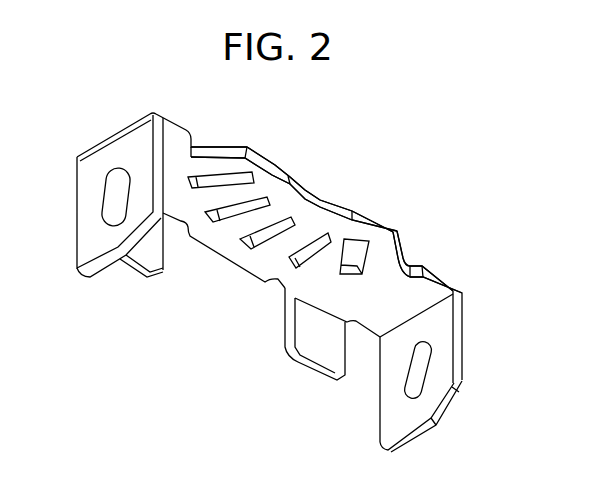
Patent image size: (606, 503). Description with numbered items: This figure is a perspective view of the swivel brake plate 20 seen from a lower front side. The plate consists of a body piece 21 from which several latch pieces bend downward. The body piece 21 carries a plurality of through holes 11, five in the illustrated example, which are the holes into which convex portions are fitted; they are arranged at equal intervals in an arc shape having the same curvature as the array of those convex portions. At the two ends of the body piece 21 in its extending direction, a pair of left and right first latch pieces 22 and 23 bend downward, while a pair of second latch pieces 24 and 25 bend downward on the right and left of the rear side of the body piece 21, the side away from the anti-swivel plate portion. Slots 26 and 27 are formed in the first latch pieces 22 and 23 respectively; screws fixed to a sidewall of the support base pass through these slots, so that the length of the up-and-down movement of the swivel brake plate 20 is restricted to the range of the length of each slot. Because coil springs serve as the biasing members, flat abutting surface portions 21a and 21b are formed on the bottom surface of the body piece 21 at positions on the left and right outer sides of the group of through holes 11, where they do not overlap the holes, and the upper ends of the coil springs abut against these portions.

The swivel brake plate 20 is at (372, 196).
The body piece 21 is at (290, 203).
The flat abutting surface portion 21a is at (184, 173).
The flat abutting surface portion 21b is at (382, 302).
The first latch piece 22 is at (93, 170).
The first latch piece 23 is at (434, 328).
The second latch piece 24 is at (165, 270).
The second latch piece 25 is at (316, 344).
The slot 26 is at (113, 207).
The slot 27 is at (427, 375).
The through holes 11 is at (305, 255).